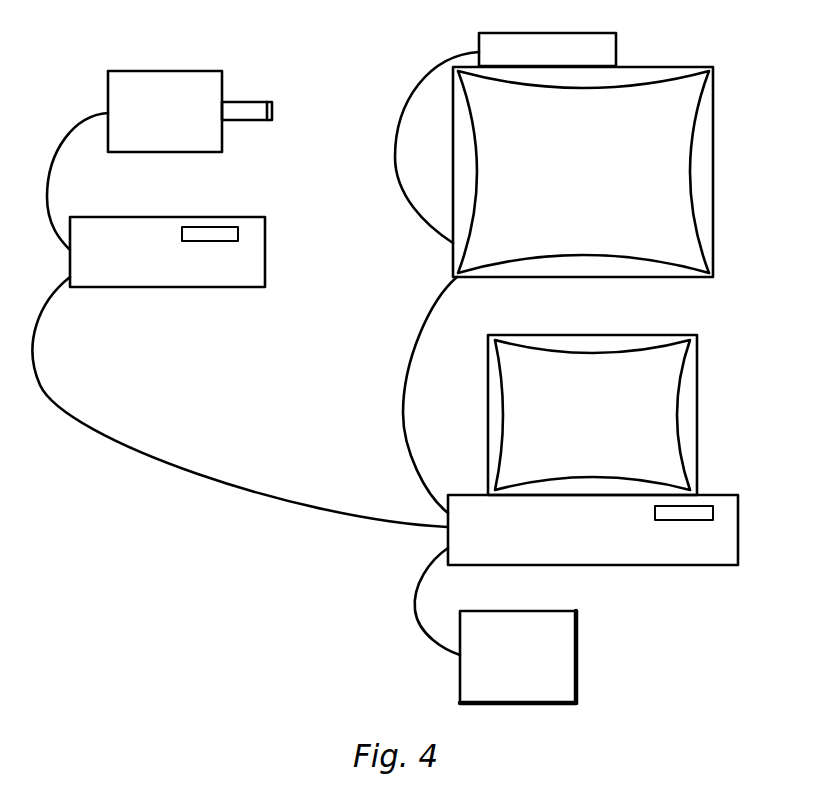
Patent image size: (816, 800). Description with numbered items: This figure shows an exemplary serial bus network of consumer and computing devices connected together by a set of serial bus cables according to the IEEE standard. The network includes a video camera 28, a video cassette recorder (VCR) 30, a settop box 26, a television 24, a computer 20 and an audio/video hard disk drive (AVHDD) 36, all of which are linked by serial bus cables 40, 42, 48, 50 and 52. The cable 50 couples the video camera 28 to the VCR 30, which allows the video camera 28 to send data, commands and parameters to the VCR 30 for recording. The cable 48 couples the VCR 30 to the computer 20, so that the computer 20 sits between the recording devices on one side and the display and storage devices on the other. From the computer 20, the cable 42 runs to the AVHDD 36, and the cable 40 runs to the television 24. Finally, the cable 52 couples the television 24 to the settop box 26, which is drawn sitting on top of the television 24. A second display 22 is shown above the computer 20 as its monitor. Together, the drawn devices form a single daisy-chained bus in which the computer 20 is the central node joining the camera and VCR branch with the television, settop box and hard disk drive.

The computer 20 is at (738, 530).
The television display 22 is at (697, 450).
The television 24 is at (713, 250).
The settop box 26 is at (616, 47).
The video camera 28 is at (192, 71).
The video cassette recorder 30 is at (265, 245).
The audio/video hard disk drive 36 is at (577, 655).
The IEEE 1394-1995 cable 40 is at (401, 397).
The IEEE 1394-1995 cable 42 is at (415, 613).
The IEEE 1394-1995 cable 48 is at (33, 383).
The IEEE 1394-1995 cable 50 is at (47, 173).
The IEEE 1394-1995 cable 52 is at (397, 133).